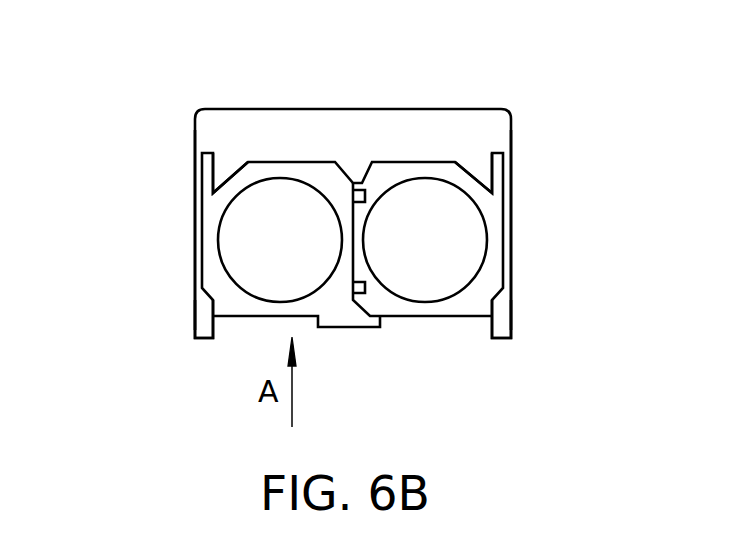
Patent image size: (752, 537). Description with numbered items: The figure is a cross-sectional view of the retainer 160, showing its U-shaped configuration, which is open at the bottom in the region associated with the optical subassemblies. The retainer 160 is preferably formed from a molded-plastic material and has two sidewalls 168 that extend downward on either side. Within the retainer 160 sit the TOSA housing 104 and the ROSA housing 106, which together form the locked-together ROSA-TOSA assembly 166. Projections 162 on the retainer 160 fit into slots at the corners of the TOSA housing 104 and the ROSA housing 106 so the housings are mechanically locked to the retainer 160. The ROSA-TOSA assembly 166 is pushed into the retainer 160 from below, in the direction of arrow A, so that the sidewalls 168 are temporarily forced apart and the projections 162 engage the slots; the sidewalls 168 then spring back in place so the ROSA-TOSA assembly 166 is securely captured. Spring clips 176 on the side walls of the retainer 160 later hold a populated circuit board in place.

The retainer 160 is at (355, 117).
The projections 162 is at (218, 185).
The TOSA housing 104 is at (222, 200).
The ROSA housing 106 is at (500, 190).
The ROSA-TOSA assembly 166 is at (352, 346).
The sidewalls 168 is at (195, 258).
The spring clips 176 is at (215, 338).